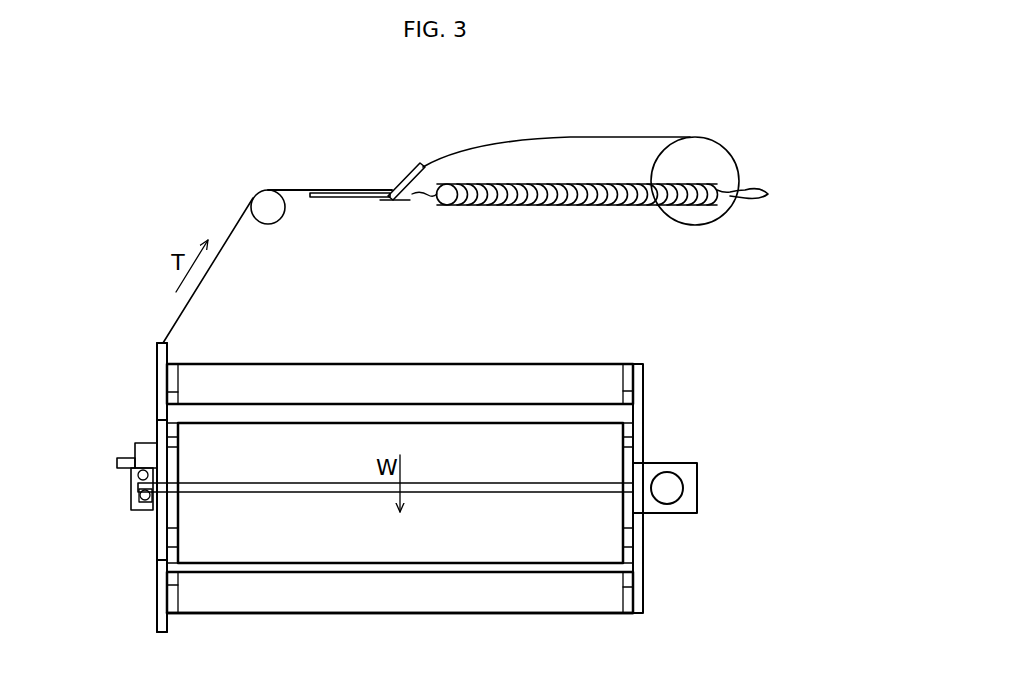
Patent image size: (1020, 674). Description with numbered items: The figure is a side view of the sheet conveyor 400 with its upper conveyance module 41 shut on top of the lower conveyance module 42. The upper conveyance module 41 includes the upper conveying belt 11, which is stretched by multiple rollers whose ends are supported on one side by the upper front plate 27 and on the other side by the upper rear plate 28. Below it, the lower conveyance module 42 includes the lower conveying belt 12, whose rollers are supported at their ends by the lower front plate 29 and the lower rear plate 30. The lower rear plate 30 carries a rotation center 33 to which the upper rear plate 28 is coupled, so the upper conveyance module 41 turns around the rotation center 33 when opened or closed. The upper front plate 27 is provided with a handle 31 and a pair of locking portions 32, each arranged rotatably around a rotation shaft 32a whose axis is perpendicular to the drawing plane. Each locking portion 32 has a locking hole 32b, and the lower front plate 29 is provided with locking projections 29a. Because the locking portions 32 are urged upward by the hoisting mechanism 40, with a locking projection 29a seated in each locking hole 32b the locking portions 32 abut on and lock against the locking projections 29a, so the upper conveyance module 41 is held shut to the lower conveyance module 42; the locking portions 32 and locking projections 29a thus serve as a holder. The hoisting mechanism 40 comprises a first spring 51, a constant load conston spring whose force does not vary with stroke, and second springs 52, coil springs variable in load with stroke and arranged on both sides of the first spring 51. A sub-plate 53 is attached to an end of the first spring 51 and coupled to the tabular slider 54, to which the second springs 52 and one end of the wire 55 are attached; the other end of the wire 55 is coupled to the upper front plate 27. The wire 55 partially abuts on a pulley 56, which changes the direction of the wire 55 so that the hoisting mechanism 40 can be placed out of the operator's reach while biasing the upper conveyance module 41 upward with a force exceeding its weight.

The sheet conveyor 400 is at (750, 113).
The hoisting mechanism 40 is at (528, 115).
The wire 55 is at (296, 187).
The sub-plate 53 is at (413, 180).
The slider 54 is at (350, 198).
The pulley 56 is at (281, 222).
The second spring 52 is at (574, 205).
The first spring 51 is at (728, 212).
The upper conveying belt 11 is at (416, 355).
The lower conveying belt 12 is at (393, 622).
The upper conveyance module 41 is at (150, 357).
The lower conveyance module 42 is at (142, 612).
The upper front plate 27 is at (160, 390).
The upper rear plate 28 is at (639, 407).
The lower front plate 29 is at (163, 572).
The locking projection 29a is at (157, 496).
The lower rear plate 30 is at (642, 571).
The handle 31 is at (117, 462).
The locking portion 32 is at (131, 487).
The rotation shaft 32a is at (143, 470).
The locking hole 32b is at (138, 503).
The rotation center 33 is at (677, 487).